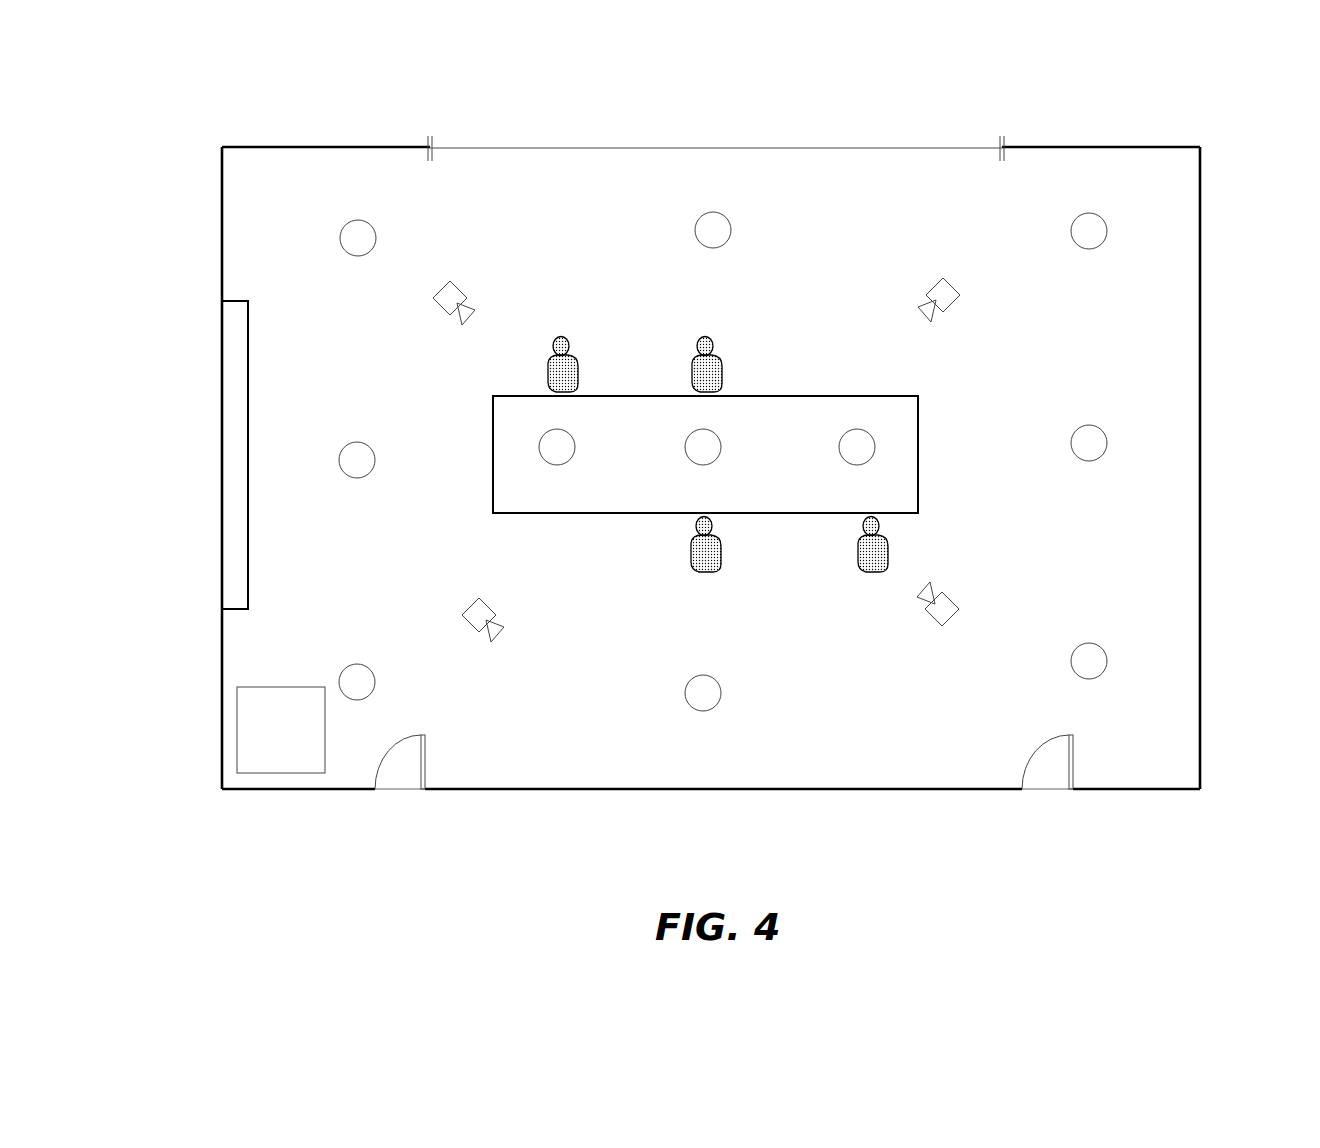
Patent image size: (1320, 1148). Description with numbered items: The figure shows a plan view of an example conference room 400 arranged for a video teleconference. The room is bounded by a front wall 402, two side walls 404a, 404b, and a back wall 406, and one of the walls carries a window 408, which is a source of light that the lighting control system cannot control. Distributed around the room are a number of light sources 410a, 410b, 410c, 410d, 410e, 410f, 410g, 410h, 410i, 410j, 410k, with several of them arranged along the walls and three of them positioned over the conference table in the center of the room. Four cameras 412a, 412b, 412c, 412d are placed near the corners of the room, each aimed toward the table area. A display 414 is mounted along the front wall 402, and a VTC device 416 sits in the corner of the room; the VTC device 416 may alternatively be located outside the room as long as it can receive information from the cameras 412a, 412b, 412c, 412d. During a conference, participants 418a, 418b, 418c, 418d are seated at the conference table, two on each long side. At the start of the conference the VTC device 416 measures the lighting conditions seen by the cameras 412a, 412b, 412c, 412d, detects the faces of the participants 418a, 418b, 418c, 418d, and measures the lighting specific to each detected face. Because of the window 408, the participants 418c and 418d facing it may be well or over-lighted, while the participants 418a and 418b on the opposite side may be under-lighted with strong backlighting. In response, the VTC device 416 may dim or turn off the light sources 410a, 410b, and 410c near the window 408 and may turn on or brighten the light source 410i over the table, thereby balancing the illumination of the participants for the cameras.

The conference room 400 is at (1227, 105).
The front wall 402 is at (222, 250).
The side wall 404a is at (300, 147).
The side wall 404b is at (813, 789).
The back wall 406 is at (1200, 352).
The window 408 is at (716, 148).
The light source 410a is at (376, 244).
The light source 410b is at (731, 236).
The light source 410c is at (1107, 237).
The light source 410d is at (1107, 449).
The light source 410e is at (1107, 667).
The light source 410f is at (721, 699).
The light source 410g is at (375, 688).
The light source 410h is at (375, 466).
The light source 410i is at (567, 445).
The light source 410j is at (721, 447).
The light source 410k is at (875, 447).
The camera 412a is at (467, 297).
The camera 412b is at (958, 292).
The camera 412c is at (958, 610).
The camera 412d is at (503, 606).
The display 414 is at (248, 415).
The VTC device 416 is at (281, 730).
The participant 418a is at (568, 338).
The participant 418b is at (712, 338).
The participant 418c is at (721, 560).
The participant 418d is at (888, 558).